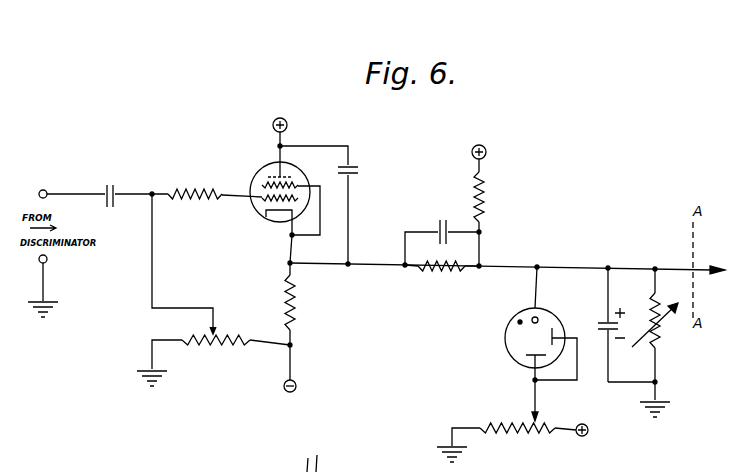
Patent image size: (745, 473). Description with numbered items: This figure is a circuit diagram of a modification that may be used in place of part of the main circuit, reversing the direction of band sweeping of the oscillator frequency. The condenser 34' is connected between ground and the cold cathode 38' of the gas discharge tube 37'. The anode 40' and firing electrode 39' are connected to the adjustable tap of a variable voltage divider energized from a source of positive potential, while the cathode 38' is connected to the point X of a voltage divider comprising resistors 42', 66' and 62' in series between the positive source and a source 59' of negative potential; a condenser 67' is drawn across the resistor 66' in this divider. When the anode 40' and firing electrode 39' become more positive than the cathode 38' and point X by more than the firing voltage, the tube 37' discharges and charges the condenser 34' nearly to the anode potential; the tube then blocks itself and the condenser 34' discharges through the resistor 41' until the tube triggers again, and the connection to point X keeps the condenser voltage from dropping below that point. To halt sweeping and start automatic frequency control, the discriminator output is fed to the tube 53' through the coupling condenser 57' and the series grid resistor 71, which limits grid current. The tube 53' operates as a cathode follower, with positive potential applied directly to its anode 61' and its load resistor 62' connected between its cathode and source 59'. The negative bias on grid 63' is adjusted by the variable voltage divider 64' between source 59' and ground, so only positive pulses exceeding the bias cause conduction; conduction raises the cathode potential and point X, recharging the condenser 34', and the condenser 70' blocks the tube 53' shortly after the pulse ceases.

The coupling condenser 57' is at (92, 182).
The series grid resistor 71 is at (204, 188).
The cathode follower tube 53' is at (266, 177).
The anode 61' is at (312, 149).
The grid 63' is at (259, 223).
The condenser 70' is at (369, 178).
The capacitor 67' is at (437, 230).
The resistor 42' is at (507, 195).
The point X is at (483, 262).
The resistor 66' is at (442, 285).
The load or output resistor 62' is at (314, 296).
The variable voltage divider 64' is at (201, 293).
The source of negative potential 59' is at (316, 385).
The gas discharge tube 37' is at (507, 338).
The cold cathode 38' is at (548, 302).
The firing electrode 39' is at (491, 349).
The anode 40' is at (510, 371).
The condenser 34' is at (617, 310).
The resistor 41' is at (674, 325).